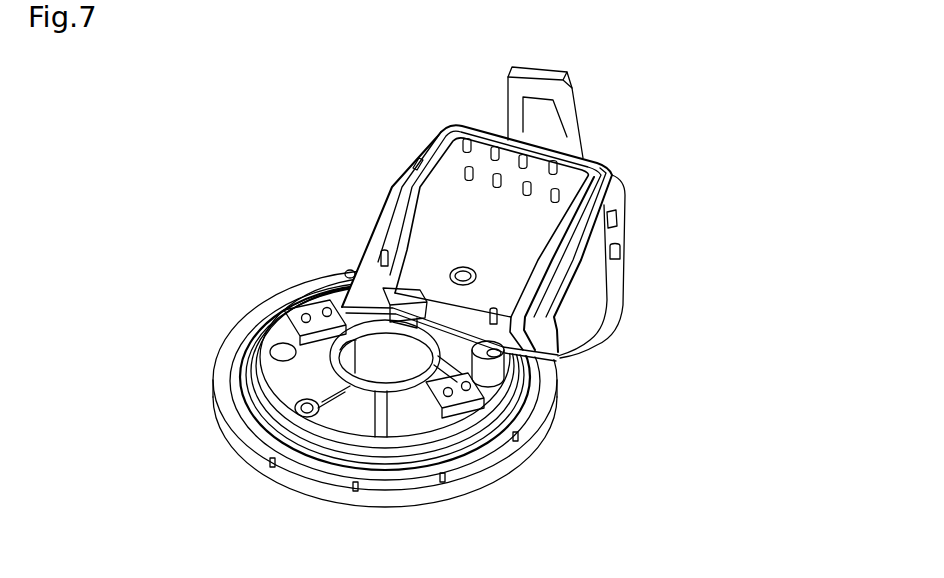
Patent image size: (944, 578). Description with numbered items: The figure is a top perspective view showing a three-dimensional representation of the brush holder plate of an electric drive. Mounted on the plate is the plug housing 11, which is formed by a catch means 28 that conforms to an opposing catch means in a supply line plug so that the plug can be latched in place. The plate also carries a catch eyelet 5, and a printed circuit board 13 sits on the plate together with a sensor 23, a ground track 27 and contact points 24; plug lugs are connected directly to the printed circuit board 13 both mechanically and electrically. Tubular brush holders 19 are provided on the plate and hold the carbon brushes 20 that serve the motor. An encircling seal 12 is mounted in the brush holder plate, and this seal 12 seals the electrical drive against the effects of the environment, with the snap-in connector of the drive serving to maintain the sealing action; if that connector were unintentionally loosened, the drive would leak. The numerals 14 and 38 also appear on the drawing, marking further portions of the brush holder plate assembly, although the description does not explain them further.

The catch eyelet 5 is at (538, 90).
The plug housing 11 is at (625, 278).
The seal 12 is at (230, 383).
The printed circuit board 13 is at (437, 217).
The housing bottom 14 is at (413, 487).
The tubular brush holders 19 is at (327, 307).
The carbon brushes 20 is at (357, 373).
The sensor 23 is at (393, 334).
The contact points 24 is at (380, 257).
The ground track 27 is at (476, 276).
The catch means 28 is at (625, 247).
The flange ring 38 is at (548, 388).